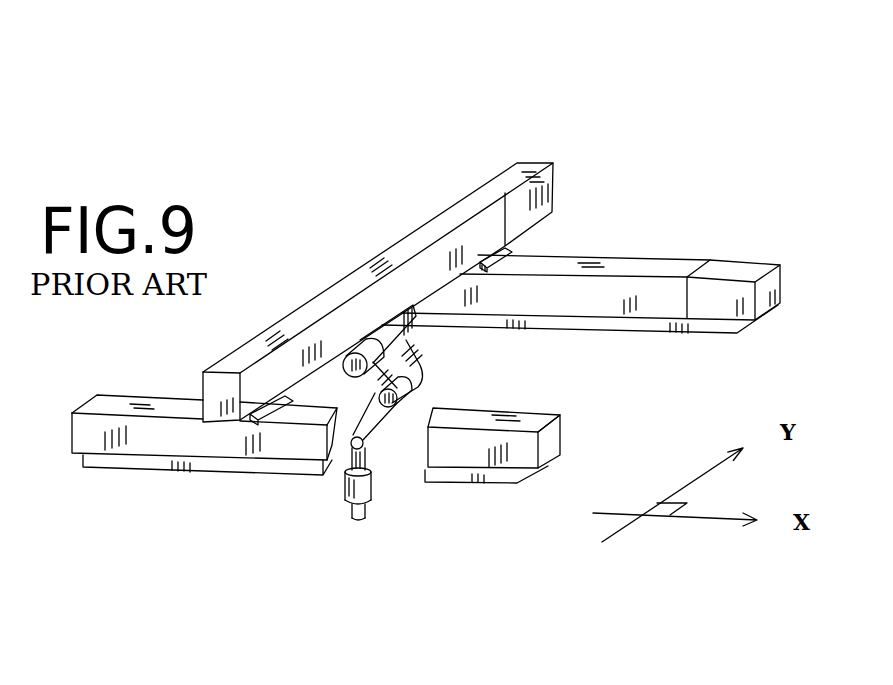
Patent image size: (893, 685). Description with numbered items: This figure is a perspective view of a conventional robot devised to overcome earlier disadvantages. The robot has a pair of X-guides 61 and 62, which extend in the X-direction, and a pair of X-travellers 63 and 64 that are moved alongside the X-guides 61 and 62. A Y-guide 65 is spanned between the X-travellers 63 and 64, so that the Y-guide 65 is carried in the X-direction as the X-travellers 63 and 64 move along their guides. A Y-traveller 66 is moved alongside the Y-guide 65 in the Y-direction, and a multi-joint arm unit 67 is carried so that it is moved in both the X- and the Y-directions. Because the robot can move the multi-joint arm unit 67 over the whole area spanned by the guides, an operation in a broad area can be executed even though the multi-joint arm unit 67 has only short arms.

The X-guide 61 is at (614, 266).
The X-guide 62 is at (475, 425).
The X-traveller 63 is at (485, 250).
The X-traveller 64 is at (280, 407).
The Y-guide 65 is at (344, 274).
The Y-traveller 66 is at (403, 313).
The multi-joint arm unit 67 is at (412, 408).